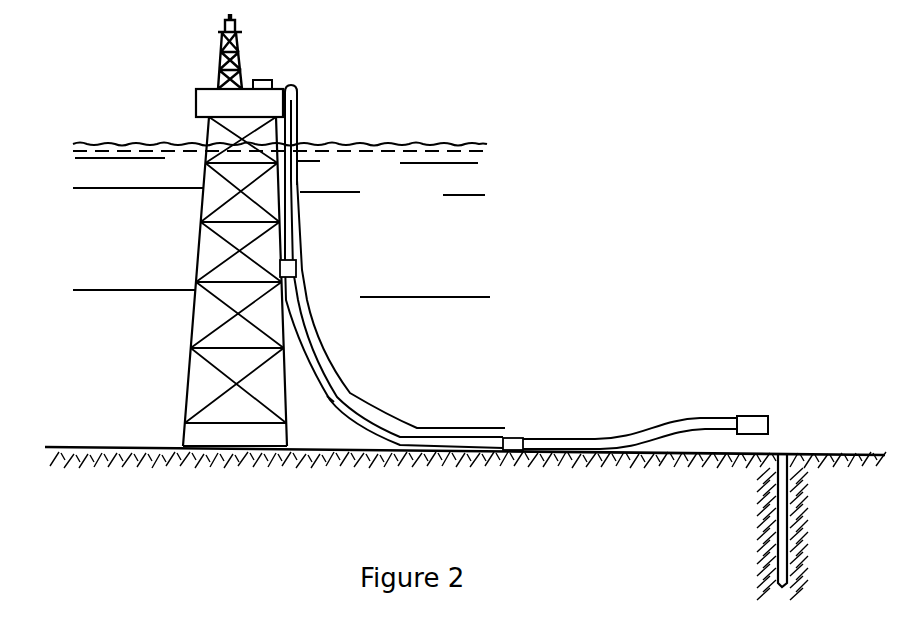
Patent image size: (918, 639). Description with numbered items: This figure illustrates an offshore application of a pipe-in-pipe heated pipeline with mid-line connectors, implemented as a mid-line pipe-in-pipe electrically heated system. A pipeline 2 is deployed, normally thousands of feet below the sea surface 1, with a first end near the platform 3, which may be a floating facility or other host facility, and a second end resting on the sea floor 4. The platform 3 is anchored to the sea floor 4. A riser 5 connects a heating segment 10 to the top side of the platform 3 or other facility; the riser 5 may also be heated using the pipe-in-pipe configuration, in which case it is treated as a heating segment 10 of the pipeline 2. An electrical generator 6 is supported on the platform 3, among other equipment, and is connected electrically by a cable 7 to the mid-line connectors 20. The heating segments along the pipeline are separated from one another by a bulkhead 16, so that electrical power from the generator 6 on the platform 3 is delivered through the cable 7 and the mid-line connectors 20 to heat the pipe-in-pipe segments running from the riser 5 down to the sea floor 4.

The sea surface 1 is at (437, 147).
The pipeline 2 is at (395, 300).
The platform 3 is at (194, 94).
The sea floor 4 is at (109, 445).
The riser 5 is at (299, 176).
The electrical generator 6 is at (260, 79).
The cable 7 is at (302, 212).
The heating segment 10 is at (546, 438).
The bulkhead 16 is at (339, 405).
The mid-line connector 20 is at (297, 267).